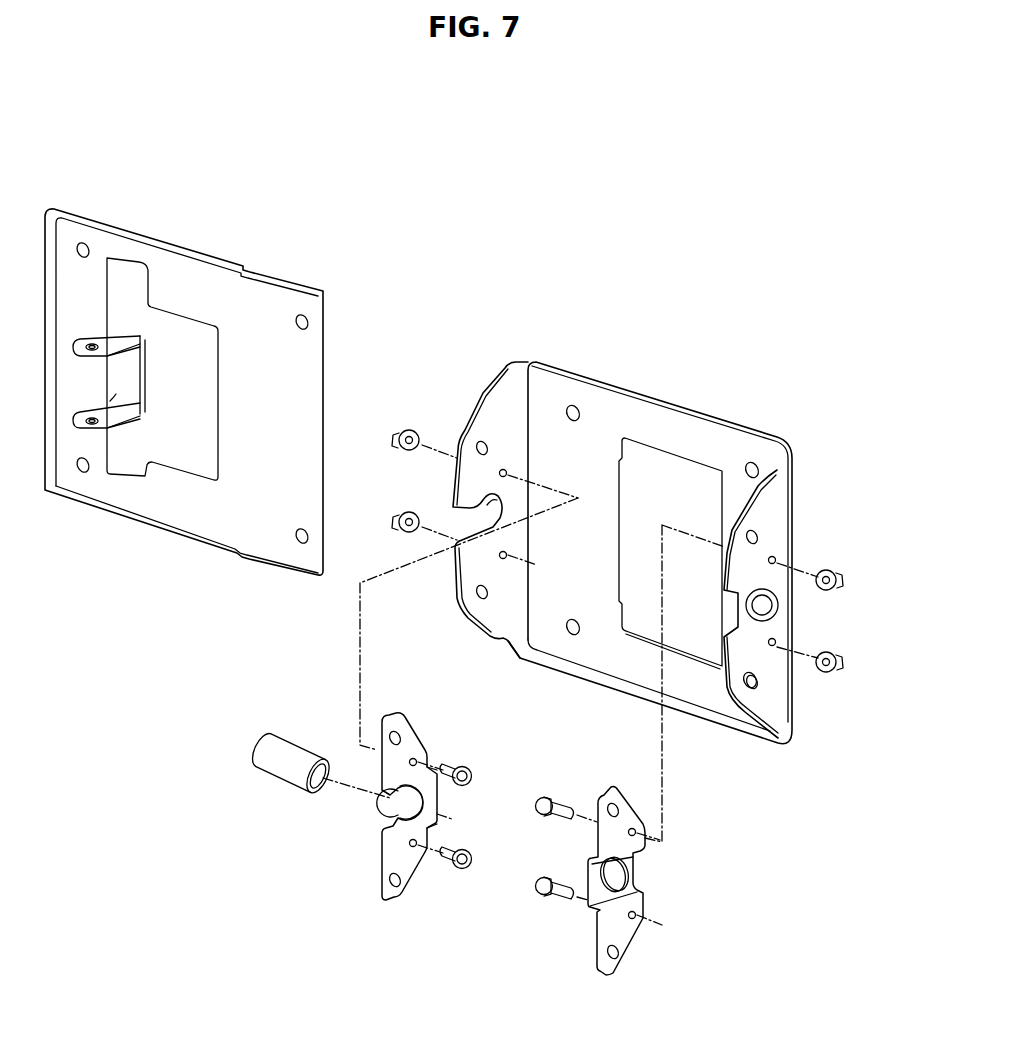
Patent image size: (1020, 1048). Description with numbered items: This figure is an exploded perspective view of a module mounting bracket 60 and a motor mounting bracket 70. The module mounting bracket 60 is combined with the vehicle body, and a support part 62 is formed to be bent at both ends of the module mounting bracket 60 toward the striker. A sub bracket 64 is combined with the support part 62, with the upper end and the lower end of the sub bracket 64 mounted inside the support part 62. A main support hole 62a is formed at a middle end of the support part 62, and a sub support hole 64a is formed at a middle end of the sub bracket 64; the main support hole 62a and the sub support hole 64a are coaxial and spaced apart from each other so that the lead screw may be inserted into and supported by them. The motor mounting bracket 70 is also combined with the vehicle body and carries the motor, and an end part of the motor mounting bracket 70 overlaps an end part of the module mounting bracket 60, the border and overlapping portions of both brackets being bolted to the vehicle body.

The motor mounting bracket 70 is at (189, 273).
The module mounting bracket 60 is at (632, 420).
The support part 62 is at (505, 397).
The main support hole 62a is at (491, 518).
The sub bracket 64 is at (392, 860).
The sub support hole 64a is at (405, 800).